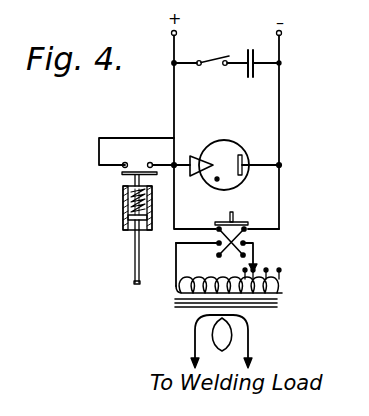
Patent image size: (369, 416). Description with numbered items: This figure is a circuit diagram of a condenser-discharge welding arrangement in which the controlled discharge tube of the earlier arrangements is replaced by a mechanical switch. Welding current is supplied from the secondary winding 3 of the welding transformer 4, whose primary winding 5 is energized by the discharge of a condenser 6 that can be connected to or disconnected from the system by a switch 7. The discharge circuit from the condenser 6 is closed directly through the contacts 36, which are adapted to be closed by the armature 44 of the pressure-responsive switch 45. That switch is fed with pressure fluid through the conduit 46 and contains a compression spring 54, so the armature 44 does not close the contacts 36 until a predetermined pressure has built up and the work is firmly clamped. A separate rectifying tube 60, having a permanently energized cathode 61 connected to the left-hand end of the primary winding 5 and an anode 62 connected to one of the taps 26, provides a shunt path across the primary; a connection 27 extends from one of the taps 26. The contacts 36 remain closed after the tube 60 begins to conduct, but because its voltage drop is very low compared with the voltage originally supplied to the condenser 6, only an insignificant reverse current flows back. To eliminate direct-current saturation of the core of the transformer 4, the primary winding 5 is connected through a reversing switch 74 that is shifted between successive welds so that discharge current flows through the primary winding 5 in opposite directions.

The secondary winding 3 is at (225, 335).
The welding transformer 4 is at (186, 311).
The primary winding 5 is at (180, 290).
The condenser 6 is at (259, 57).
The switch 7 is at (219, 59).
The taps 26 is at (283, 266).
The connection 27 is at (281, 101).
The contacts 36 is at (150, 162).
The armature 44 is at (122, 175).
The pressure-responsive switch 45 is at (124, 216).
The conduit 46 is at (135, 261).
The compression spring 54 is at (132, 200).
The rectifying tube 60 is at (221, 152).
The cathode 61 is at (207, 169).
The anode 62 is at (243, 160).
The reversing switch 74 is at (243, 221).